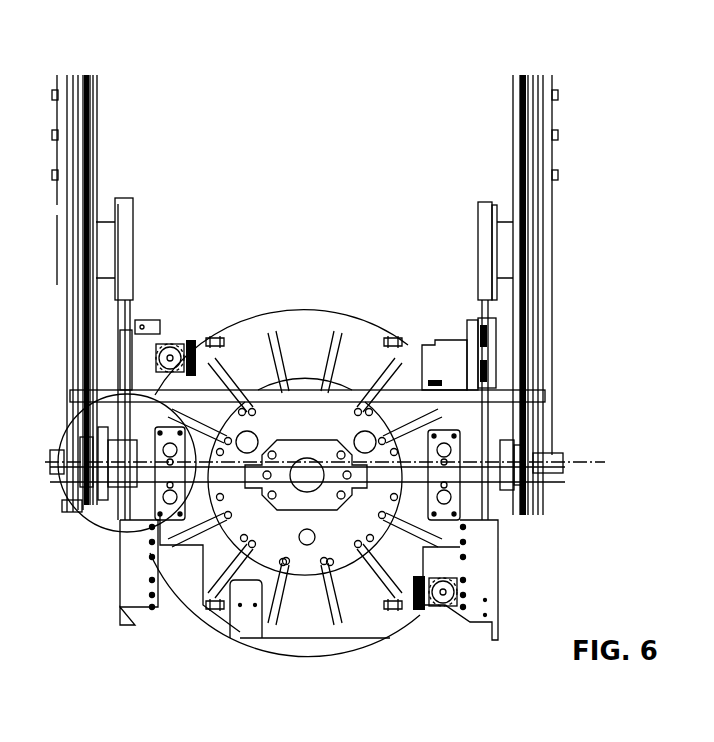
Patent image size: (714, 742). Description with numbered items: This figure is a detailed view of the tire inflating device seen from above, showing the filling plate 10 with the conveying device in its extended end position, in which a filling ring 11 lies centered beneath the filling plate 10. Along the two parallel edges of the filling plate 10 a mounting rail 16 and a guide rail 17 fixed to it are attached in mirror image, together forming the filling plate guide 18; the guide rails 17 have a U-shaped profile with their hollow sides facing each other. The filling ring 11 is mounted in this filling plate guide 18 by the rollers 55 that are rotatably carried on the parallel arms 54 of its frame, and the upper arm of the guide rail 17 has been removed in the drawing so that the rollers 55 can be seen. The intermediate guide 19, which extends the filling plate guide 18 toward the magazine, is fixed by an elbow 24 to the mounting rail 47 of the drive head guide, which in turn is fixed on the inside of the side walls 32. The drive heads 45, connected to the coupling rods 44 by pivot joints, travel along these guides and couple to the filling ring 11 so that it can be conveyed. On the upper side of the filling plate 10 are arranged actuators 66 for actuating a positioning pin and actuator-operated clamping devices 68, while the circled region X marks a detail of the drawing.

The filling plate 10 is at (312, 335).
The filling ring 11 is at (292, 303).
The mounting rail 16 is at (492, 553).
The guide rail 17 is at (492, 412).
The filling plate guide 18 is at (116, 336).
The intermediate guide 19 is at (133, 242).
The elbow 24 is at (497, 235).
The side wall 32 is at (553, 150).
The coupling rod 44 is at (516, 148).
The drive head 45 is at (530, 478).
The mounting rail 47 is at (538, 195).
The arm 54 is at (467, 372).
The roller 55 is at (497, 335).
The actuator 66 is at (172, 348).
The clamping device 68 is at (466, 497).
The detail region X is at (95, 525).